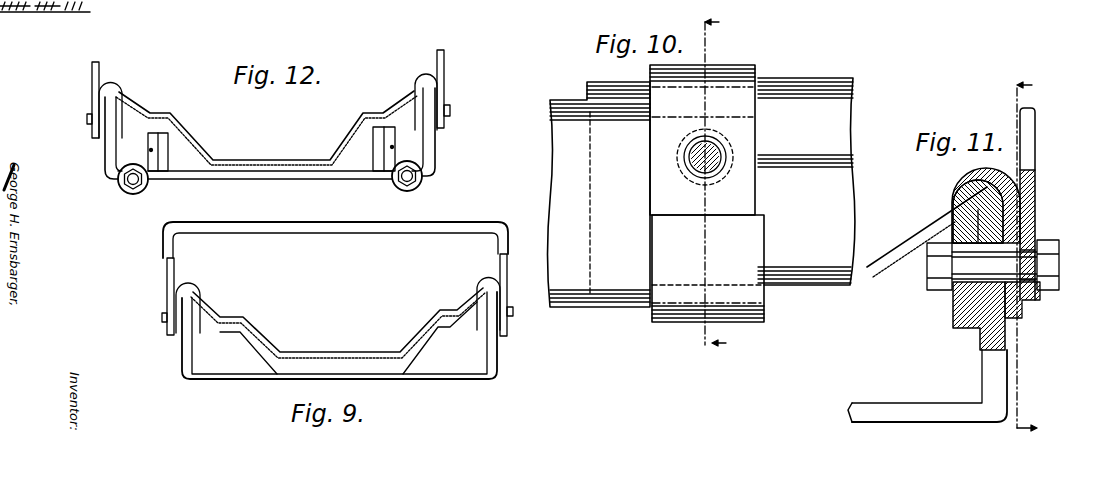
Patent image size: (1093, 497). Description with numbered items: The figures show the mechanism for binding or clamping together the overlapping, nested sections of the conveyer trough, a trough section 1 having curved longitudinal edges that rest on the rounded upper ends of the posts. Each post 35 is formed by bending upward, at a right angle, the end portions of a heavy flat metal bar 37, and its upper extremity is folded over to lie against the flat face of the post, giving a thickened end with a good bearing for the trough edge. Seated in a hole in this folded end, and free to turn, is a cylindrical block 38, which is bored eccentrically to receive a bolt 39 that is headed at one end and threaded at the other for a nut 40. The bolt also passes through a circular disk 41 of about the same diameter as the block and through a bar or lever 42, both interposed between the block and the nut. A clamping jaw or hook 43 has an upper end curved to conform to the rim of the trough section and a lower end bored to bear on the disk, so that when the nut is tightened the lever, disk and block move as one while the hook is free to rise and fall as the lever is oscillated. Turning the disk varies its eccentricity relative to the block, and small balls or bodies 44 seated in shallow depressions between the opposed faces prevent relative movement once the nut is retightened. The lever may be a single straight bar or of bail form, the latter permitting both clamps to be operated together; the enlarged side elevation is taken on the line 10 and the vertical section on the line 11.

In FIG. 12, the trough section 1 is at (300, 158).
In FIG. 9, the trough section 1 is at (382, 350).
In FIG. 10, the trough section 1 is at (599, 194).
In FIG. 11, the trough section 1 is at (927, 232).
In FIG. 11, the section line 10— 10 is at (1045, 254).
In FIG. 10, the section line 11— 11 is at (726, 181).
In FIG. 12, the post 35 is at (105, 154).
In FIG. 9, the post 35 is at (182, 348).
In FIG. 10, the post 35 is at (735, 252).
In FIG. 11, the post 35 is at (983, 372).
In FIG. 9, the heavy flat metal bar 37 is at (467, 379).
In FIG. 11, the heavy flat metal bar 37 is at (858, 415).
In FIG. 10, the cylindrical block 38 is at (730, 147).
In FIG. 11, the cylindrical block 38 is at (948, 252).
In FIG. 12, the bolt 39 is at (87, 119).
In FIG. 9, the bolt 39 is at (162, 319).
In FIG. 10, the bolt 39 is at (722, 165).
In FIG. 11, the bolt 39 is at (962, 265).
In FIG. 11, the nut 40 is at (1045, 266).
In FIG. 10, the circular disk 41 is at (718, 178).
In FIG. 11, the circular disk 41 is at (1040, 298).
In FIG. 12, the bar or lever 42 is at (92, 77).
In FIG. 9, the bar or lever 42 is at (176, 276).
In FIG. 10, the bar or lever 42 is at (806, 181).
In FIG. 11, the bar or lever 42 is at (1035, 146).
In FIG. 12, the clamping jaw or hook 43 is at (118, 86).
In FIG. 9, the clamping jaw or hook 43 is at (201, 293).
In FIG. 10, the clamping jaw or hook 43 is at (735, 65).
In FIG. 11, the clamping jaw or hook 43 is at (955, 178).
In FIG. 11, the small balls, blocks or bodies 44 is at (1036, 233).